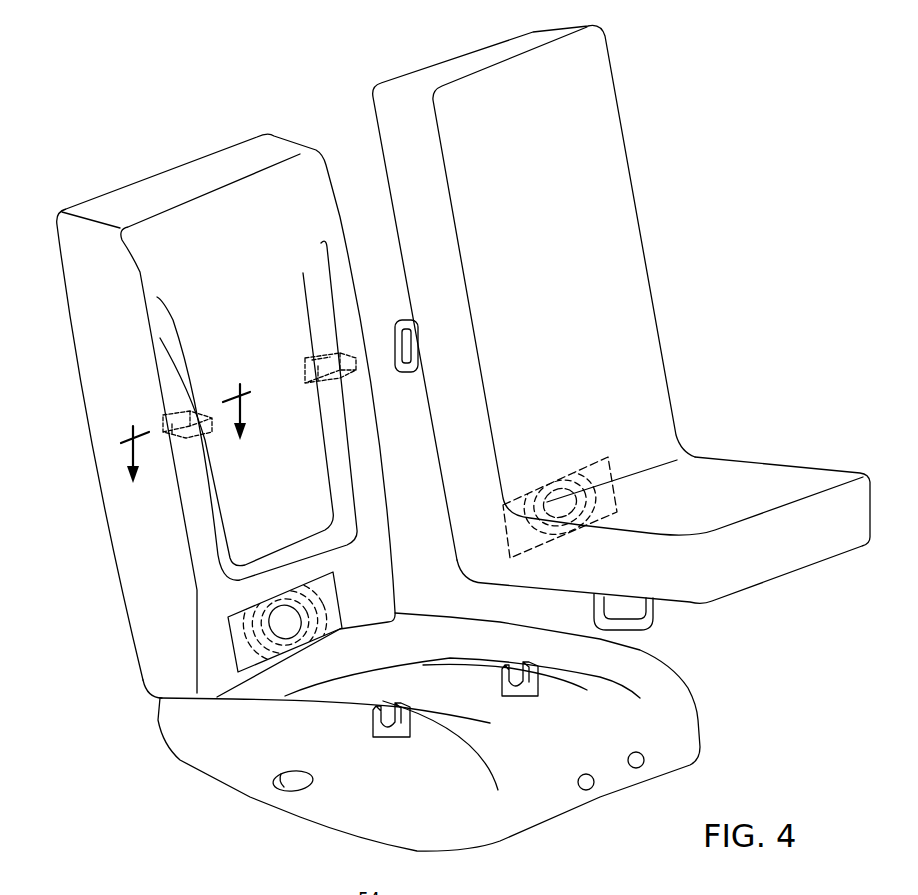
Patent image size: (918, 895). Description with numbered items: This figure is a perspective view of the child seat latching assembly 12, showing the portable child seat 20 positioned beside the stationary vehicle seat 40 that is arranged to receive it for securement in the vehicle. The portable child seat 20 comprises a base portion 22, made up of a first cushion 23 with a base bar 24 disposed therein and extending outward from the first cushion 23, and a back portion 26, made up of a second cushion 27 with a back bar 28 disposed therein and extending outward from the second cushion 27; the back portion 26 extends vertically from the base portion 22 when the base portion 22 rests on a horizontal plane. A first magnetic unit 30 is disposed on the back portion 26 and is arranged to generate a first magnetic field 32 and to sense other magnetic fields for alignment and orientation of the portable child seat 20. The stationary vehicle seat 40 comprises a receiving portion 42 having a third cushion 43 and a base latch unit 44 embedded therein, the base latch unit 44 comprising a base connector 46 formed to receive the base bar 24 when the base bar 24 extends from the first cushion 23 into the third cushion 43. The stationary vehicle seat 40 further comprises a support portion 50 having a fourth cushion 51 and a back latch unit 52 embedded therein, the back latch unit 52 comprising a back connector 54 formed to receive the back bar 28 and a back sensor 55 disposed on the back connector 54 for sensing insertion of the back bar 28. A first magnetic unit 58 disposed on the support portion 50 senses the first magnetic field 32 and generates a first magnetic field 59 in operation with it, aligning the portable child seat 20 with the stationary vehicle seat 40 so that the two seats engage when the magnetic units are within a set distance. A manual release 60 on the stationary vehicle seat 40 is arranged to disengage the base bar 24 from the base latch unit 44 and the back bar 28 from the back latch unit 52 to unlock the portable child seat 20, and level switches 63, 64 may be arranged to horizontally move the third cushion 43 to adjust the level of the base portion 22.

The child seat latching assembly 12 is at (140, 62).
The portable child seat 20 is at (402, 66).
The base portion 22 is at (780, 484).
The first cushion 23 is at (740, 573).
The base bar 24 is at (654, 608).
The back portion 26 is at (443, 159).
The second cushion 27 is at (436, 183).
The back bar 28 is at (397, 334).
The first magnetic unit 30 is at (570, 474).
The first magnetic field 32 is at (585, 500).
The stationary vehicle seat 40 is at (117, 175).
The receiving portion 42 is at (682, 722).
The third cushion 43 is at (372, 793).
The base latch unit 44 is at (403, 700).
The base connector 46 is at (397, 733).
The support portion 50 is at (107, 273).
The fourth cushion 51 is at (113, 350).
The back latch unit 52 is at (307, 382).
The back connector 54 is at (312, 352).
The back sensor 55 is at (451, 890).
The first magnetic unit 58 is at (245, 660).
The first magnetic field 59 is at (257, 624).
The manual release 60 is at (278, 780).
The level switch 63 is at (643, 758).
The level switch 64 is at (594, 781).